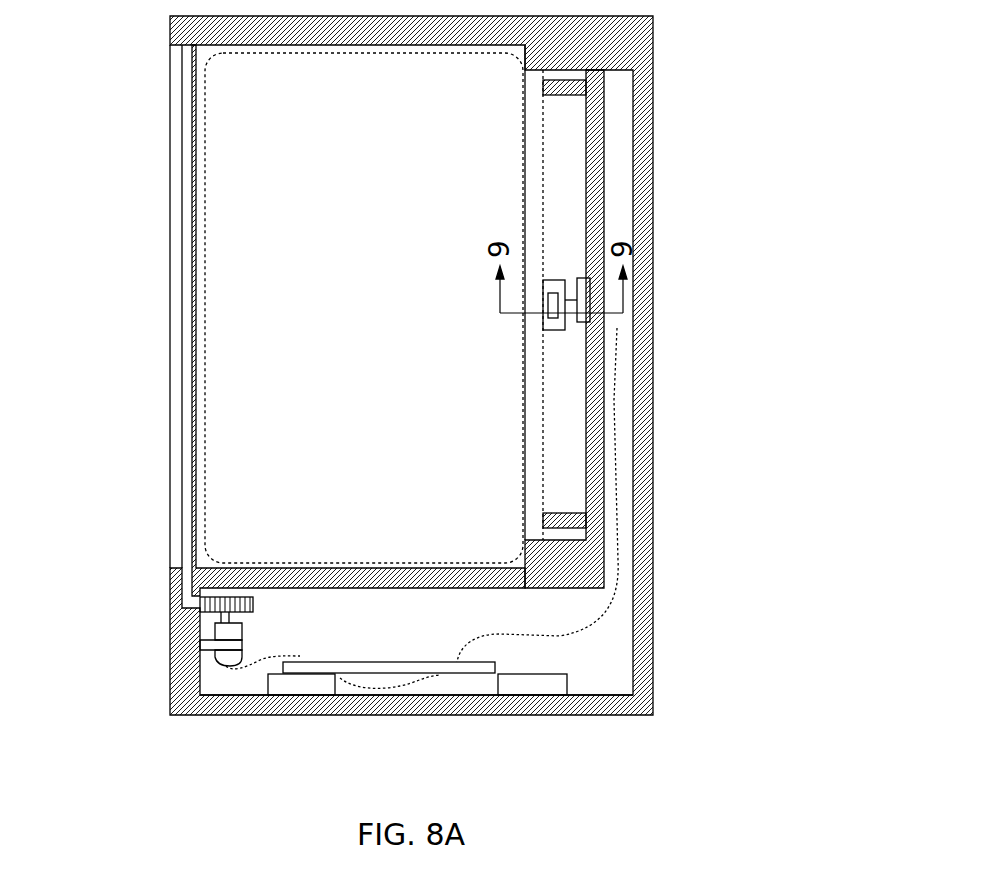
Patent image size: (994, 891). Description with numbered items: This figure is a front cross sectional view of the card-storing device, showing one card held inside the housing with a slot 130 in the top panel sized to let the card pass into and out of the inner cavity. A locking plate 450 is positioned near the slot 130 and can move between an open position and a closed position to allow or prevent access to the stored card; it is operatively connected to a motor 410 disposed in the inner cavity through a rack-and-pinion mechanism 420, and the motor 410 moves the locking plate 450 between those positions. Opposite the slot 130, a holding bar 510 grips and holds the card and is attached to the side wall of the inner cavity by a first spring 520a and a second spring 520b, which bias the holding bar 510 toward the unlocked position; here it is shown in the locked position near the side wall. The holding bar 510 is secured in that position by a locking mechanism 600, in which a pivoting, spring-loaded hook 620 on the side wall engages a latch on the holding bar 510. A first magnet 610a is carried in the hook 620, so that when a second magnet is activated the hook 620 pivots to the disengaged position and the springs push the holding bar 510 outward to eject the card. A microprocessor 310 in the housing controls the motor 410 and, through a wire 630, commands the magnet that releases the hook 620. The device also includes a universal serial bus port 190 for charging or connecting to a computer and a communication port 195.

The locking mechanism 600 is at (806, 236).
The slot 130 is at (170, 72).
The locking plate 450 is at (188, 163).
The holding bar 510 is at (537, 160).
The first spring 520a is at (578, 92).
The second spring 520b is at (548, 520).
The first magnet 610a is at (558, 295).
The hook 620 is at (592, 306).
The wire 630 is at (612, 420).
The rack-and-pinion mechanism 420 is at (200, 609).
The motor 410 is at (212, 648).
The microprocessor 310 is at (405, 700).
The universal serial bus (USB) port 190 is at (540, 688).
The communication port 195 is at (285, 715).